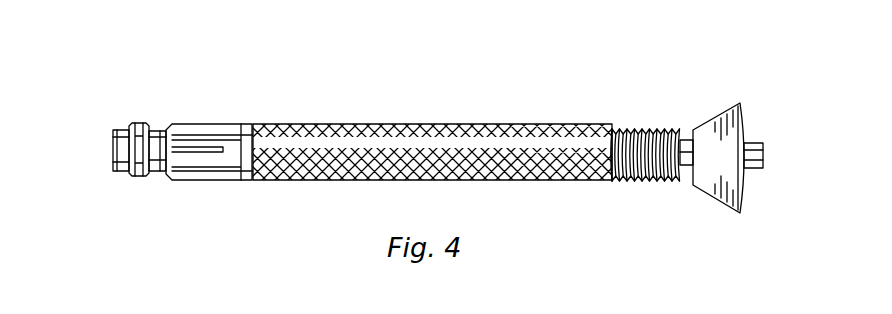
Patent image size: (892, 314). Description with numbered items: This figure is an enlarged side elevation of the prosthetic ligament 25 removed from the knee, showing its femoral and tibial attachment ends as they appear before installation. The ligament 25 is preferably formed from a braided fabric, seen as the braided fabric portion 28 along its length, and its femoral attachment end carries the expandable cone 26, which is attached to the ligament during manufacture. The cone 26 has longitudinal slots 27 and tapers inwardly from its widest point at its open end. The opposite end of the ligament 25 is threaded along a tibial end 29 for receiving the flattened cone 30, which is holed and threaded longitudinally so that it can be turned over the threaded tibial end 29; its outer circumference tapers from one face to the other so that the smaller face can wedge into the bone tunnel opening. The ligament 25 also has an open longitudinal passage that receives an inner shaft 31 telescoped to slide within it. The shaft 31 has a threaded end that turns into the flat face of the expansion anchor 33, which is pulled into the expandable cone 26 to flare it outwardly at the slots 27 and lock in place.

The prosthetic ligament 25 is at (448, 85).
The expandable cone 26 is at (207, 124).
The longitudinal slots 27 is at (207, 153).
The braided sheath 28 is at (305, 124).
The threaded prosthetic ligament tibial end 29 is at (645, 182).
The flattened cone 30 is at (740, 103).
The inner shaft 31 is at (752, 143).
The expansion anchor 33 is at (138, 177).